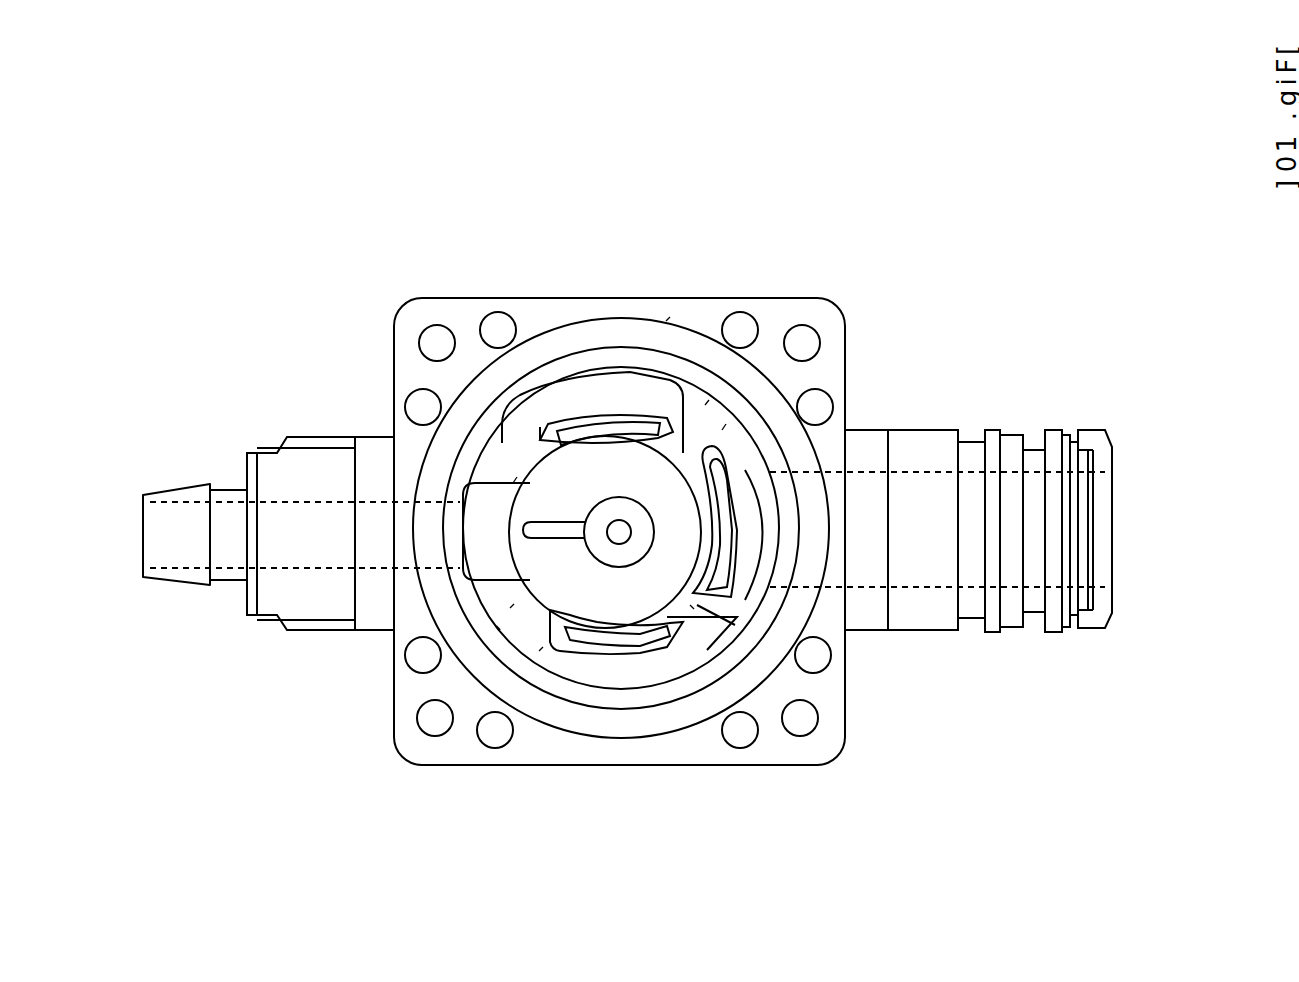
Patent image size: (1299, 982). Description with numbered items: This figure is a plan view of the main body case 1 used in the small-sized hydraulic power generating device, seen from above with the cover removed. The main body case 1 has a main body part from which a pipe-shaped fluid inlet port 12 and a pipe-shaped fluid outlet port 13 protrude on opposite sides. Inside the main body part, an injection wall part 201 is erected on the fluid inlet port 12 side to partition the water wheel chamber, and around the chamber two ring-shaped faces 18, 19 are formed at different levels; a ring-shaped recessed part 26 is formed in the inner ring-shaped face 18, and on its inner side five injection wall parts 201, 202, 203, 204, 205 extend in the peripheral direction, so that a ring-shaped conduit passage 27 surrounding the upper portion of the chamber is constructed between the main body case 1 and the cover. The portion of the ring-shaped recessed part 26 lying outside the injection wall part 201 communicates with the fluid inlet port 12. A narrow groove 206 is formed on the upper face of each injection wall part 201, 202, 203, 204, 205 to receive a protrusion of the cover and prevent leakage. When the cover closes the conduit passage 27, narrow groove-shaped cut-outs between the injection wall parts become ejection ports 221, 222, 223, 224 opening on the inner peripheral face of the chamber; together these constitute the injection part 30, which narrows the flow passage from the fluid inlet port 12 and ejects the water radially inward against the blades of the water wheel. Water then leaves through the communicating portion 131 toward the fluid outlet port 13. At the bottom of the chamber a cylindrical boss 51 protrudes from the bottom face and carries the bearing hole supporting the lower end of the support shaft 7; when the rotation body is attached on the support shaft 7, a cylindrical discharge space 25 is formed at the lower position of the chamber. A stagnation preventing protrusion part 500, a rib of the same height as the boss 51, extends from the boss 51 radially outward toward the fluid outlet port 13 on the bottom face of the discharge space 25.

The main body case 1 is at (795, 312).
The support shaft 7 is at (612, 545).
The fluid inlet port 12 is at (1113, 493).
The fluid outlet port 13 is at (175, 490).
The inner ring-shaped face 18 is at (533, 470).
The ring-shaped face 19 is at (670, 317).
The discharge space 25 is at (752, 588).
The injection part 30 is at (688, 563).
The ring-shaped recessed part 26 is at (797, 292).
The ring-shaped conduit passage 27 is at (705, 405).
The cylindrical boss 51 is at (630, 500).
The communicating portion 131 is at (483, 523).
The injection wall part 201 is at (745, 495).
The injection wall part 202 is at (590, 375).
The injection wall part 203 is at (500, 480).
The injection wall part 204 is at (693, 583).
The injection wall part 205 is at (500, 630).
The narrow groove 206 is at (668, 400).
The ejection port 221 is at (722, 430).
The ejection port 222 is at (517, 477).
The ejection port 223 is at (690, 605).
The ejection port 224 is at (543, 647).
The stagnation preventing protrusion part 500 is at (510, 608).